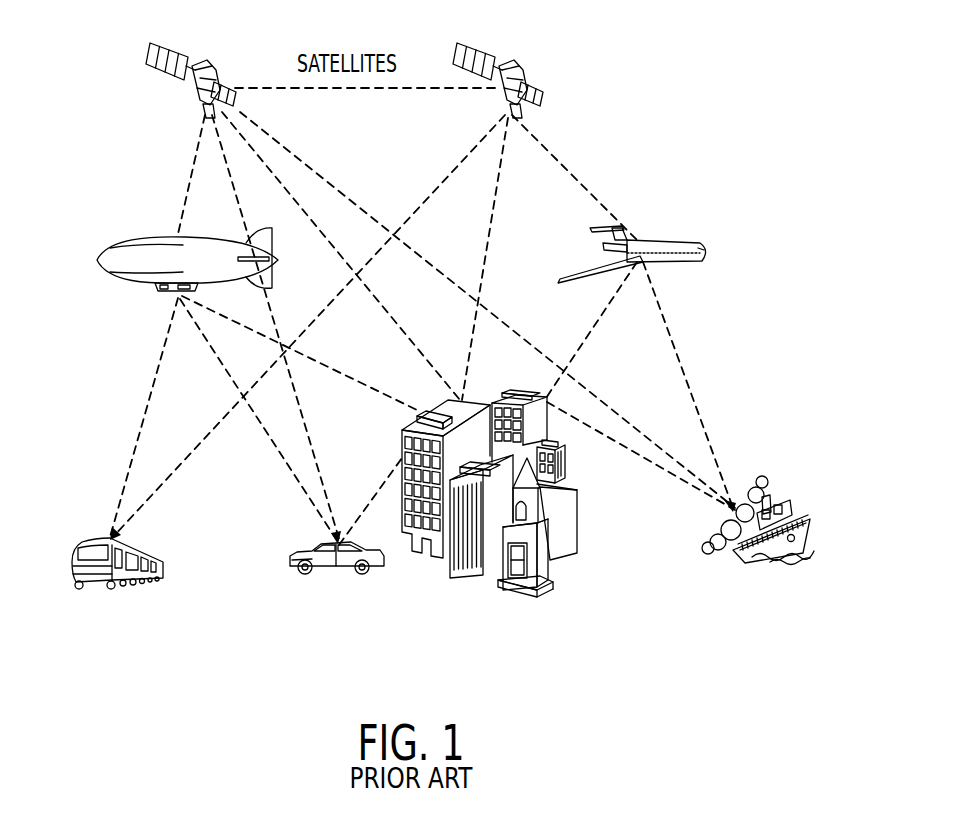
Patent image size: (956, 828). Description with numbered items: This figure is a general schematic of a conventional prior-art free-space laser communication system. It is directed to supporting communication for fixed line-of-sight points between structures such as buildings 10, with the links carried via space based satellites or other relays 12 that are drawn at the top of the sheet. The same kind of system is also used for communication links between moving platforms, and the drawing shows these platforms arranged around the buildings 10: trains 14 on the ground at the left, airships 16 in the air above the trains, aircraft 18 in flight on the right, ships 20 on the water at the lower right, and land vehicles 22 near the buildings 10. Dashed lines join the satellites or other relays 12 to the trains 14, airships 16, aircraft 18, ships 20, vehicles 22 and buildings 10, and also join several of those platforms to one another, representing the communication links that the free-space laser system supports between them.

The buildings 10 is at (540, 594).
The space based satellites or other relays 12 is at (200, 67).
The trains 14 is at (85, 547).
The airships 16 is at (128, 238).
The aircraft 18 is at (667, 240).
The ships 20 is at (780, 508).
The vehicles 22 is at (337, 546).